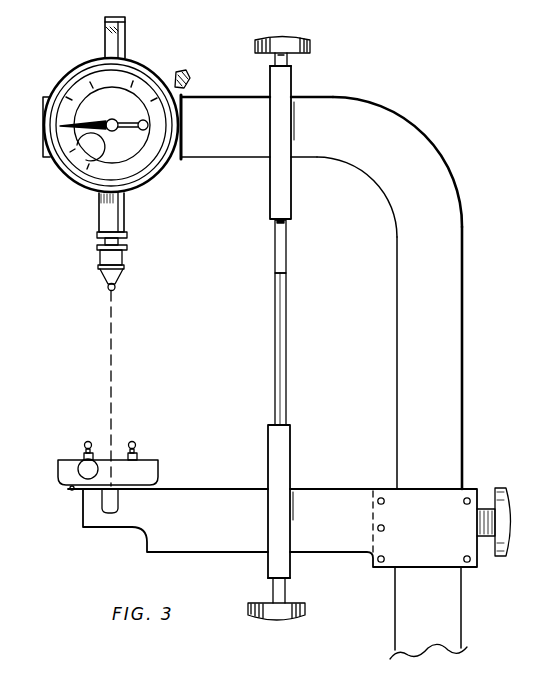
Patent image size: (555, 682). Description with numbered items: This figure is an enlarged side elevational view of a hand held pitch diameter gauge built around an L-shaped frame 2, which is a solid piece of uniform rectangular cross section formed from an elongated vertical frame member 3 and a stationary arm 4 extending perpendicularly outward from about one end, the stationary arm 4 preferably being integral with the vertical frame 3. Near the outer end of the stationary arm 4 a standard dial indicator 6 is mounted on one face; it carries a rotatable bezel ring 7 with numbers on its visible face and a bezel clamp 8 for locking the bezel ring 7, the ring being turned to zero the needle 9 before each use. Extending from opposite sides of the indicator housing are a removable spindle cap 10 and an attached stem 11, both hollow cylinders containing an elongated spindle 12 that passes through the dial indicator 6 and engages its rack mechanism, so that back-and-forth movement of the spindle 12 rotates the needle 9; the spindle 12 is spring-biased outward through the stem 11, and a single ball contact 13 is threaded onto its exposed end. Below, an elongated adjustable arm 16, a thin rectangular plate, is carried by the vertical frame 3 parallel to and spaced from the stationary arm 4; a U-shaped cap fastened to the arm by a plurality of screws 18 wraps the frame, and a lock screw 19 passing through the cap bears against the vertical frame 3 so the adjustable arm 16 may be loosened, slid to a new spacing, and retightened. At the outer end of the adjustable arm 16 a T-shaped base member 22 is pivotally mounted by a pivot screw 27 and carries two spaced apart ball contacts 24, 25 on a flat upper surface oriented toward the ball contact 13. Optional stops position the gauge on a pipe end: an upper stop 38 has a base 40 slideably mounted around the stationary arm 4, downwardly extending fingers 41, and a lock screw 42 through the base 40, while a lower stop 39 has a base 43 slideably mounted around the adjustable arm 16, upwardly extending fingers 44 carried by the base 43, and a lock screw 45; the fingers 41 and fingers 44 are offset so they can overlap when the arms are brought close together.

The L-shaped frame 2 is at (438, 152).
The vertical frame member 3 is at (463, 279).
The stationary arm 4 is at (312, 95).
The dial indicator 6 is at (60, 62).
The bezel ring 7 is at (133, 61).
The bezel clamp 8 is at (176, 72).
The needle 9 is at (80, 118).
The spindle cap 10 is at (105, 19).
The stem 11 is at (99, 205).
The spindle 12 is at (120, 242).
The ball contact 13 is at (118, 284).
The adjustable arm 16 is at (190, 553).
The screws 18 is at (380, 497).
The lock screw 19 is at (504, 487).
The base member 22 is at (160, 467).
The ball contact 24 is at (85, 441).
The ball contact 25 is at (133, 441).
The pivot screw 27 is at (102, 501).
The upper stop 38 is at (292, 175).
The lower stop 39 is at (291, 436).
The base 40 is at (292, 69).
The fingers 41 is at (286, 232).
The lock screw 42 is at (308, 40).
The base 43 is at (292, 562).
The fingers 44 is at (282, 305).
The lock screw 45 is at (306, 607).